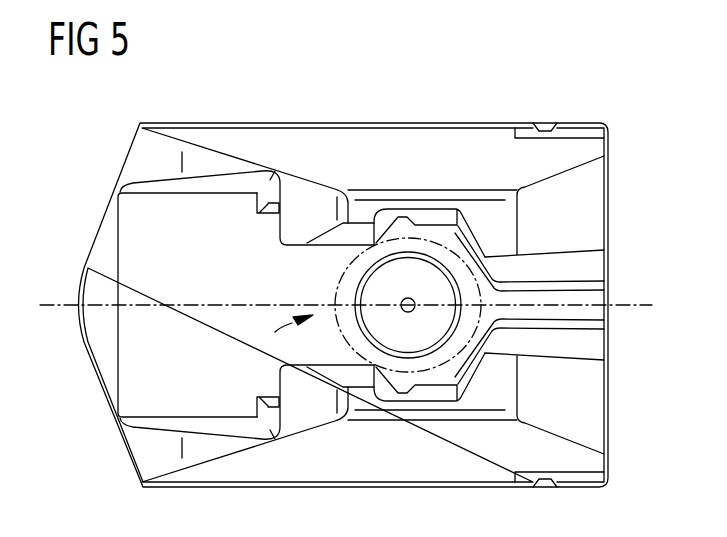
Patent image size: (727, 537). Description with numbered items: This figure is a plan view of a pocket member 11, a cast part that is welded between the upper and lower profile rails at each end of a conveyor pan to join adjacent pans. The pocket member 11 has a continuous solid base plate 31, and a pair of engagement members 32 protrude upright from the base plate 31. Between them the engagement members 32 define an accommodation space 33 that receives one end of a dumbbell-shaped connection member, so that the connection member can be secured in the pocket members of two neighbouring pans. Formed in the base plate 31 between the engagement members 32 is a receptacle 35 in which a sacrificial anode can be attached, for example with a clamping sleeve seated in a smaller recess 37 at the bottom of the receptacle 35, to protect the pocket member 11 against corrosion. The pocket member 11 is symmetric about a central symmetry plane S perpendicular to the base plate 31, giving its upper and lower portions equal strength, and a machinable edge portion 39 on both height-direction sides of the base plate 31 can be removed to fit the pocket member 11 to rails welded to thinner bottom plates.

The pocket member 11 is at (612, 183).
The base plate 31 is at (128, 389).
The engagement members 32 is at (273, 228).
The accommodation space 33 is at (275, 332).
The receptacle 35 is at (373, 290).
The central opening 37 is at (401, 307).
The machinable edge portion 39 is at (352, 122).
The central symmetry plane S is at (640, 306).